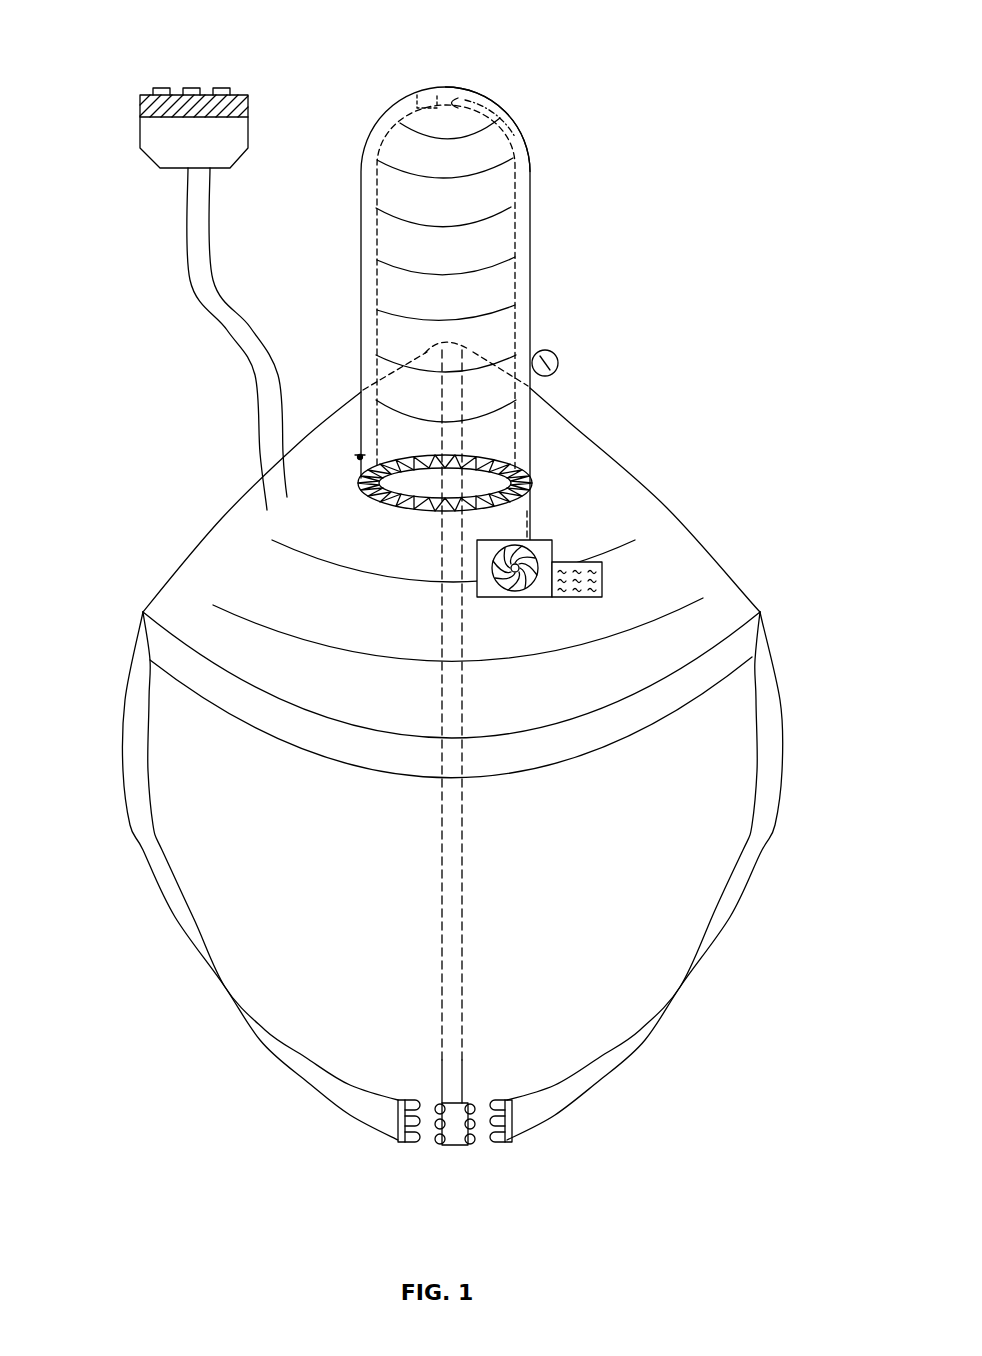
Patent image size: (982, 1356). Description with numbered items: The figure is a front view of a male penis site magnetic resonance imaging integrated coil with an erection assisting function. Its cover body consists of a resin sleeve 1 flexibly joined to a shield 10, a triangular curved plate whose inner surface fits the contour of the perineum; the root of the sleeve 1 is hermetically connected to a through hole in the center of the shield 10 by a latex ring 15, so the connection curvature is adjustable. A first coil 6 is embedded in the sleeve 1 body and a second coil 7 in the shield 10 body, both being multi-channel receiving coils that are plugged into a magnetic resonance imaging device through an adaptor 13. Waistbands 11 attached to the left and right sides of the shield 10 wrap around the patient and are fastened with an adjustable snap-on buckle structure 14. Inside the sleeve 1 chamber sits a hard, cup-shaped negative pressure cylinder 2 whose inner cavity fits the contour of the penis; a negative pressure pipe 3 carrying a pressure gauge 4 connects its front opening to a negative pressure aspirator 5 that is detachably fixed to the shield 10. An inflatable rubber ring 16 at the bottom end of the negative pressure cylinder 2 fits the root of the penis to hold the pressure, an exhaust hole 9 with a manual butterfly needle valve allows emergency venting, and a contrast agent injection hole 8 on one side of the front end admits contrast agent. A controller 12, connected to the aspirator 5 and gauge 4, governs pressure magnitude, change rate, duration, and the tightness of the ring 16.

The sleeve 1 is at (361, 249).
The negative pressure cylinder 2 is at (380, 293).
The negative pressure pipe 3 is at (528, 122).
The pressure gauge 4 is at (558, 364).
The negative pressure aspirator 5 is at (552, 540).
The first coil 6 is at (493, 217).
The second coil 7 is at (212, 603).
The contrast agent injection hole 8 is at (421, 97).
The exhaust hole 9 is at (360, 457).
The shield 10 is at (402, 743).
The waistband 11 is at (200, 982).
The controller 12 is at (603, 561).
The adaptor 13 is at (160, 170).
The snap-on buckle structure 14 is at (443, 1146).
The latex ring 15 is at (540, 497).
The inflatable rubber ring 16 is at (535, 474).